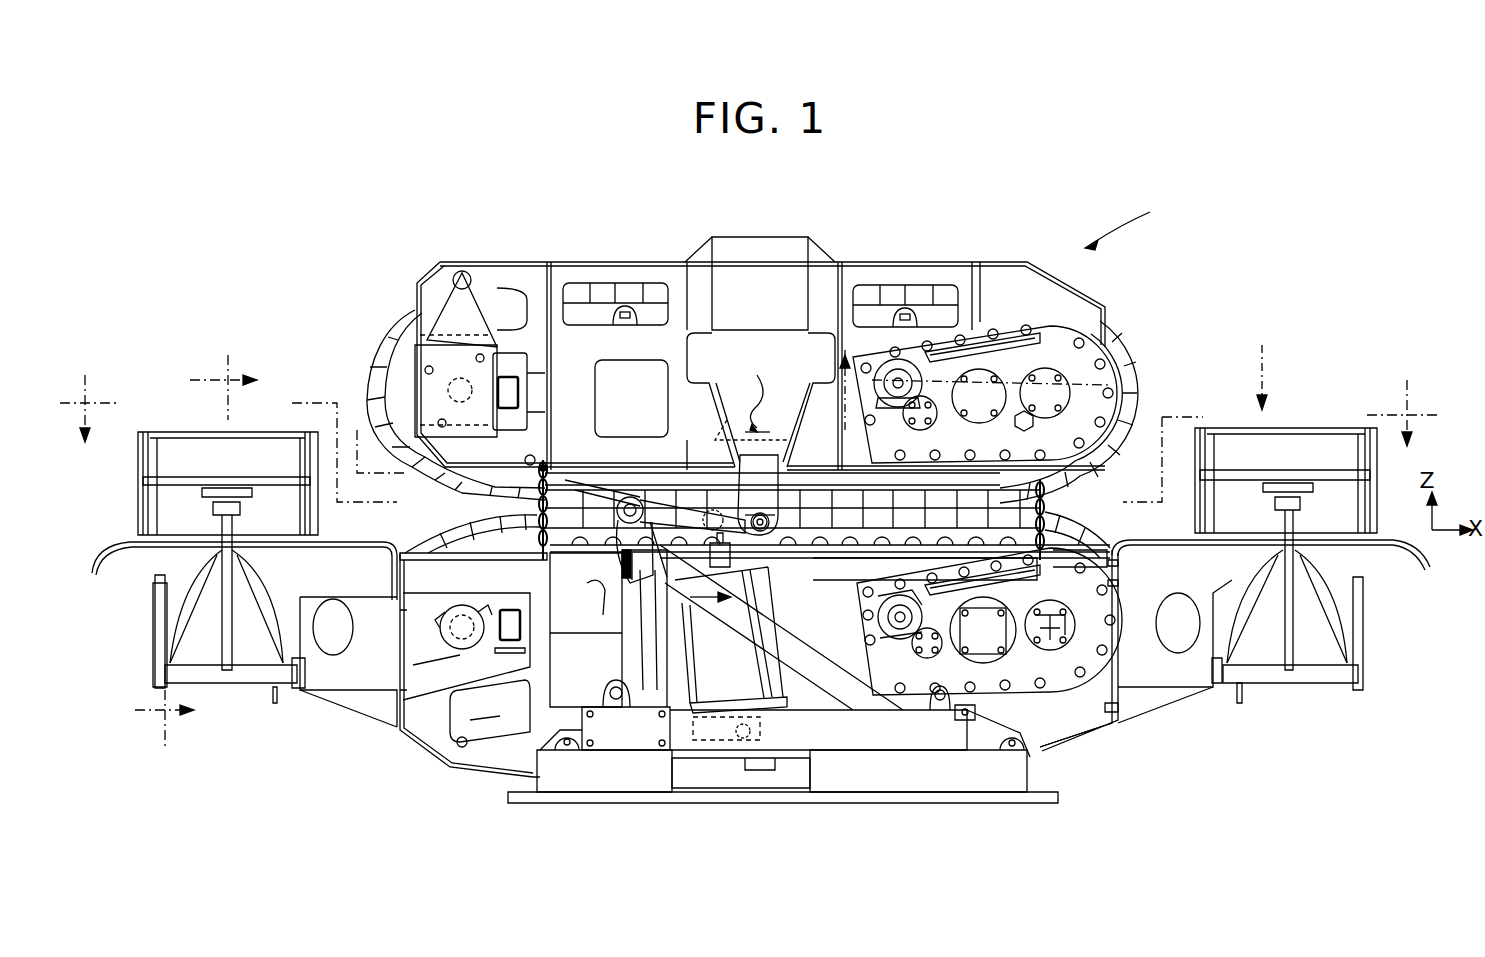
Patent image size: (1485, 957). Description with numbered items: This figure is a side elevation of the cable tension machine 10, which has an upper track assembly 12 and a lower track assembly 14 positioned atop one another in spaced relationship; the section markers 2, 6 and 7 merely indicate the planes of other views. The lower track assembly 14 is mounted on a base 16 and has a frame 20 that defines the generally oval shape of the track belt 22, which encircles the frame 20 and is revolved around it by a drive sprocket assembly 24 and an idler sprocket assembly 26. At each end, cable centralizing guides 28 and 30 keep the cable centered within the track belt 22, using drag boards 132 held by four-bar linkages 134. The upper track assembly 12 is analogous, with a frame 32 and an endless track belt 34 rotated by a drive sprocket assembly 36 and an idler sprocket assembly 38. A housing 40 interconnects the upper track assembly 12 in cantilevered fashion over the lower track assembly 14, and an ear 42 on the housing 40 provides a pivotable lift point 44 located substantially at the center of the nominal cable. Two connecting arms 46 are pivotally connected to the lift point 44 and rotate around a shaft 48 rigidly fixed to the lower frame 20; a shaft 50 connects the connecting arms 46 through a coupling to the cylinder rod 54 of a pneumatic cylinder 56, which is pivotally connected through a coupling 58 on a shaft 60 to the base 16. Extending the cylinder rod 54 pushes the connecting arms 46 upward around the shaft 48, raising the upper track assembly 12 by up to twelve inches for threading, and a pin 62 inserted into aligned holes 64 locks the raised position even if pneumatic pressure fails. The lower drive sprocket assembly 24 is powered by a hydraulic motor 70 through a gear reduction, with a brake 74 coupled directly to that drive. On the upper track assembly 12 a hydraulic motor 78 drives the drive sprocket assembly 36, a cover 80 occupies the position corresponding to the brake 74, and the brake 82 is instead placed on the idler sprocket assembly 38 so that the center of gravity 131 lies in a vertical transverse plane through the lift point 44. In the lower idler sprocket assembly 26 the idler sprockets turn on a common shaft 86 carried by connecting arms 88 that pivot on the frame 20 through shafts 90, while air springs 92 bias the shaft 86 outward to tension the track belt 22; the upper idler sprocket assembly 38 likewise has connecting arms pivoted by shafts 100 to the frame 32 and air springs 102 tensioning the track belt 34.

The section line 2- 2 is at (750, 410).
The brace arm 6 is at (781, 627).
The section line 7- 7 is at (669, 547).
The cable tension machine 10 is at (1050, 307).
The upper track assembly 12 is at (875, 258).
The lower track assembly 14 is at (1083, 742).
The base 16 is at (885, 772).
The frame 20 is at (432, 725).
The track belt 22 is at (1042, 532).
The drive sprocket assembly 24 is at (1105, 682).
The idler sprocket assembly 26 is at (395, 688).
The cable centralizing guide 28 is at (1368, 553).
The cable centralizing guide 30 is at (150, 550).
The frame 32 is at (640, 290).
The endless track belt 34 is at (1118, 350).
The drive sprocket assembly 36 is at (1124, 382).
The idler sprocket assembly 38 is at (433, 352).
The housing 40 is at (758, 262).
The ear 42 is at (772, 482).
The pivotable lift point 44 is at (759, 513).
The connecting arms 46 is at (655, 475).
The shaft 48 is at (623, 514).
The shaft 50 is at (941, 566).
The cylinder rod 54 is at (626, 555).
The pneumatic cylinder 56 is at (672, 700).
The coupling 58 is at (783, 712).
The shaft 60 is at (742, 752).
The pin 62 is at (625, 580).
The aligned holes 64 is at (548, 468).
The hydraulic motor 70 is at (900, 640).
The brake 74 is at (985, 636).
The hydraulic motor 78 is at (898, 380).
The cover 80 is at (985, 393).
The brake 82 is at (437, 400).
The common shaft 86 is at (462, 618).
The connecting arms 88 is at (412, 650).
The shafts 90 is at (462, 748).
The air springs 92 is at (510, 612).
The shafts 100 is at (462, 272).
The air springs 102 is at (510, 384).
The center of gravity 131 is at (757, 389).
The drag boards 132 is at (150, 442).
The four-bar linkages 134 is at (250, 688).